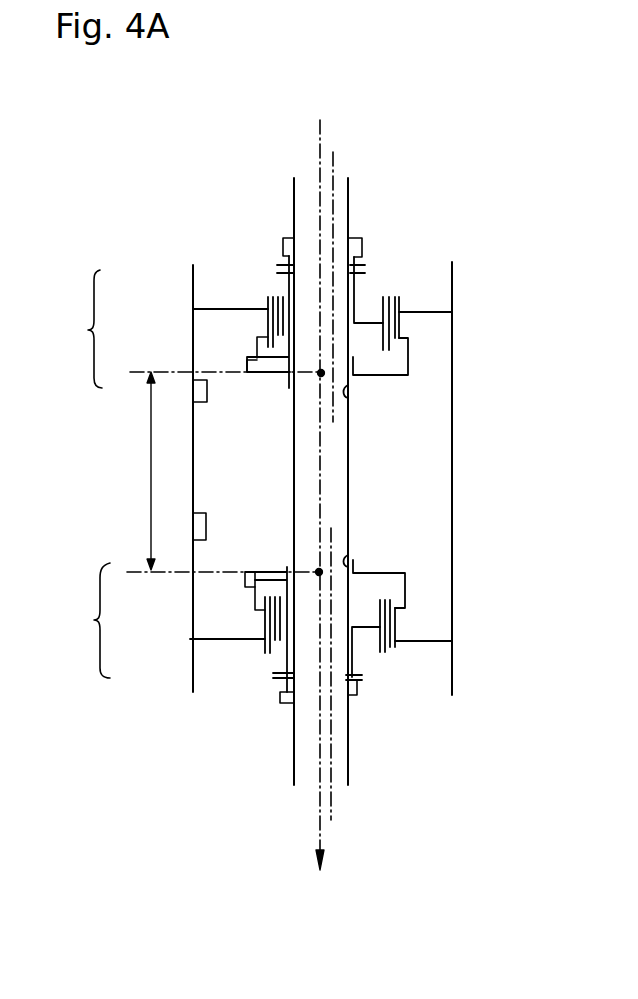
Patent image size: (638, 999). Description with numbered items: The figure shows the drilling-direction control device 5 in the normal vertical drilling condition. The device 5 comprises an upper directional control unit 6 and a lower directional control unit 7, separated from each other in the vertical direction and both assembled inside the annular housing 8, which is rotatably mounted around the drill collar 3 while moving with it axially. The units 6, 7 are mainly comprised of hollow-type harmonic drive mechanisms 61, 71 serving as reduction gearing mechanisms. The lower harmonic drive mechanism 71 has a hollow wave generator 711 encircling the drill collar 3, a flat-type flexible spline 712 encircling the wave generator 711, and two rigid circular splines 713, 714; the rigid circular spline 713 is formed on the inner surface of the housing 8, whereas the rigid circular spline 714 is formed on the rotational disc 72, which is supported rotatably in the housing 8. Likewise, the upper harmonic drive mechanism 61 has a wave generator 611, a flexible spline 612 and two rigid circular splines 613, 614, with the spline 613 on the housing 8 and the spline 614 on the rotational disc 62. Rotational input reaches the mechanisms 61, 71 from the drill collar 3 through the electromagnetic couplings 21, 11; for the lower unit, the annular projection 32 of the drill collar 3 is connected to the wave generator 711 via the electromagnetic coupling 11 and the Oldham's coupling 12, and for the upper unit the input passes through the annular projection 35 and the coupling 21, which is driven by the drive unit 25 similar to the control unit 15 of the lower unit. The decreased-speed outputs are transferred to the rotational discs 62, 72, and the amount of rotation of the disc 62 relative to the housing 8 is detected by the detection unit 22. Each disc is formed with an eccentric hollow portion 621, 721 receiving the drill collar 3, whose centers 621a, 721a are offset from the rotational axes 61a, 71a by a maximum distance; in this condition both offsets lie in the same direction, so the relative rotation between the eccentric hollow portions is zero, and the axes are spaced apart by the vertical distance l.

The drill collar 3 is at (350, 190).
The drilling-direction control device 5 is at (135, 242).
The upper directional control unit 6 is at (298, 326).
The lower directional control unit 7 is at (289, 645).
The annular housing 8 is at (193, 273).
The electromagnetic coupling 11 is at (277, 683).
The detection unit 12 is at (245, 588).
The control unit 15 is at (207, 513).
The electromagnetic coupling 21 is at (278, 264).
The detection unit 22 is at (239, 390).
The drive unit 25 is at (208, 403).
The annular projection 32 is at (280, 703).
The annular projection 35 is at (363, 240).
The harmonic drive mechanism 61 is at (201, 309).
The rotational axis 61a is at (333, 162).
The rotational disc 62 is at (380, 326).
The harmonic drive mechanism 71 is at (206, 649).
The rotational axis 71a is at (331, 820).
The rotational disc 72 is at (365, 634).
The wave generator 611 is at (385, 296).
The flexible spline 612 is at (391, 300).
The rigid circular spline 613 is at (399, 312).
The rigid circular spline 614 is at (405, 335).
The eccentric hollow portion 621 is at (347, 403).
The center 621a is at (279, 413).
The wave generator 711 is at (377, 654).
The flexible spline 712 is at (388, 654).
The rigid circular spline 713 is at (395, 650).
The rigid circular spline 714 is at (395, 615).
The eccentric hollow portion 721 is at (345, 560).
The center 721a is at (318, 571).
The distance between gear axes l is at (144, 471).